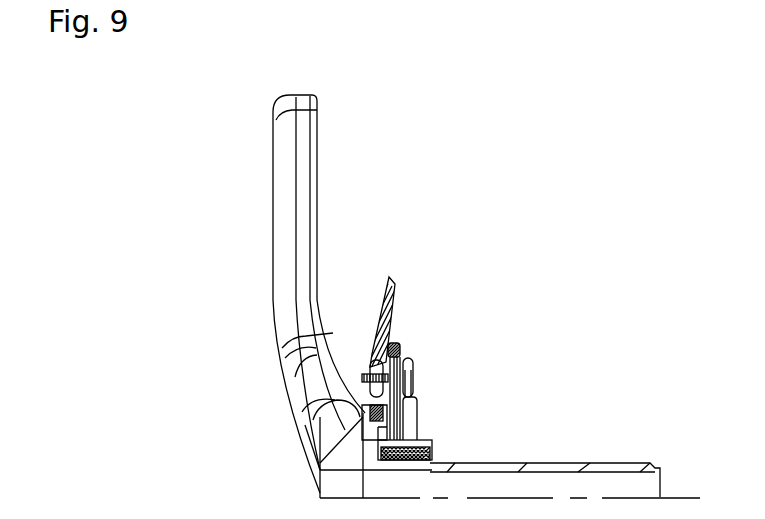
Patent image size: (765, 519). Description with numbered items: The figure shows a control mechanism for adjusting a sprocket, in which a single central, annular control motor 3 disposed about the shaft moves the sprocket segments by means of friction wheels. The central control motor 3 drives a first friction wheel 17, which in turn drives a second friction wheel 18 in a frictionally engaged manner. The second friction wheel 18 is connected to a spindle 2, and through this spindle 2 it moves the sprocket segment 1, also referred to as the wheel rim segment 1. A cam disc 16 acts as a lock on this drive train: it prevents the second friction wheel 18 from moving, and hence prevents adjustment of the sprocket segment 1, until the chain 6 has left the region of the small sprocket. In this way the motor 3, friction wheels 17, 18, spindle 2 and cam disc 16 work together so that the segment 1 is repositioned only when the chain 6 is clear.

The sprocket segment 1 is at (390, 282).
The spindle 2 is at (366, 352).
The central control motor 3 is at (430, 446).
The chain 6 is at (394, 345).
The cam disc 16 is at (402, 356).
The first friction wheel 17 is at (405, 422).
The second friction wheel 18 is at (408, 374).